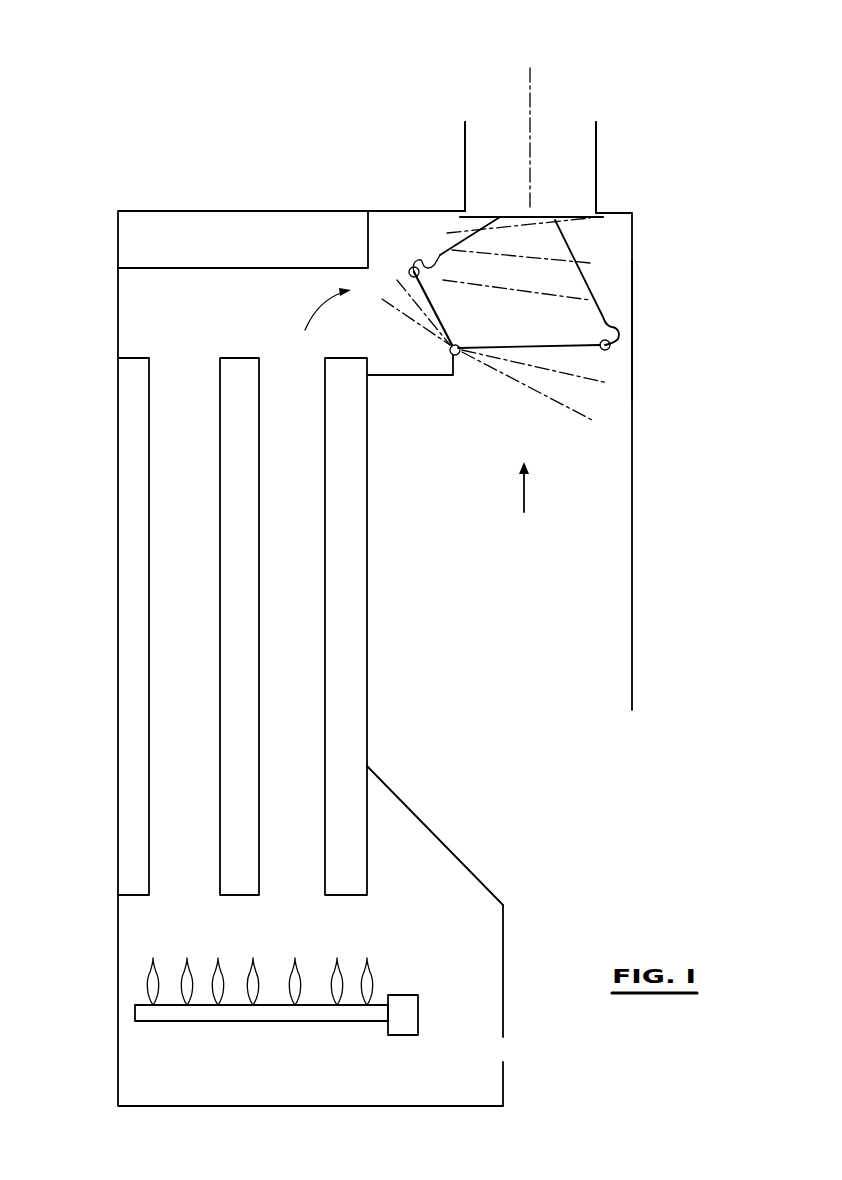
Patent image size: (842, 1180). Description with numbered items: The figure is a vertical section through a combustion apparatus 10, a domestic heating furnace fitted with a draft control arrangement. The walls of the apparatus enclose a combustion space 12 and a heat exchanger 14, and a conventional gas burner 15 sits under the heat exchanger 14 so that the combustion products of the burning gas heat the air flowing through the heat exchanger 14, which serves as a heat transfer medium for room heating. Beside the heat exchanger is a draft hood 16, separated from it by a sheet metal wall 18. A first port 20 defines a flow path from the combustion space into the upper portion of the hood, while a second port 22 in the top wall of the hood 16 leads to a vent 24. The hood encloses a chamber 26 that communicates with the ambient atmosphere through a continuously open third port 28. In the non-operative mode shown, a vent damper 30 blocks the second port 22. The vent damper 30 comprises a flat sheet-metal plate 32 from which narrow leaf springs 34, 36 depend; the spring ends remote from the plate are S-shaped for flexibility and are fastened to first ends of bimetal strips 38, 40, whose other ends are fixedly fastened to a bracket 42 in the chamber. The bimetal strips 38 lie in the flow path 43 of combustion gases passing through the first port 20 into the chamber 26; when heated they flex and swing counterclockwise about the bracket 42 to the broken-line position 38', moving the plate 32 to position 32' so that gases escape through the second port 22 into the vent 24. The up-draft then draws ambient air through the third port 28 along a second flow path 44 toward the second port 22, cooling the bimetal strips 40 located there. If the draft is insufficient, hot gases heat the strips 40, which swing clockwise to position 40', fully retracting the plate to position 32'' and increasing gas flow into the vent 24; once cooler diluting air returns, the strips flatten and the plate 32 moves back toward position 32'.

The combustion apparatus 10 is at (108, 414).
The combustion space 12 is at (250, 937).
The heat exchanger 14 is at (367, 497).
The gas burner 15 is at (315, 1013).
The draft hood 16 is at (640, 325).
The sheet metal wall 18 is at (432, 832).
The first port 20 is at (382, 334).
The second port 22 is at (575, 177).
The vent 24 is at (598, 160).
The chamber 26 is at (484, 507).
The third port 28 is at (567, 819).
The vent damper 30 is at (502, 204).
The flat sheet-metal plate 32 is at (454, 215).
The damper plate position 32' is at (485, 192).
The damper plate fully retracted position 32'' is at (567, 275).
The leaf spring 34 is at (440, 253).
The leaf spring 36 is at (575, 250).
The bimetal strip 38 is at (440, 308).
The bimetal strip flexed position 38' is at (372, 283).
The bimetal strip 40 is at (529, 330).
The bimetal strip flexed position 40' is at (576, 385).
The bracket 42 is at (432, 376).
The flow path 43 is at (312, 306).
The flow path 44 is at (527, 497).